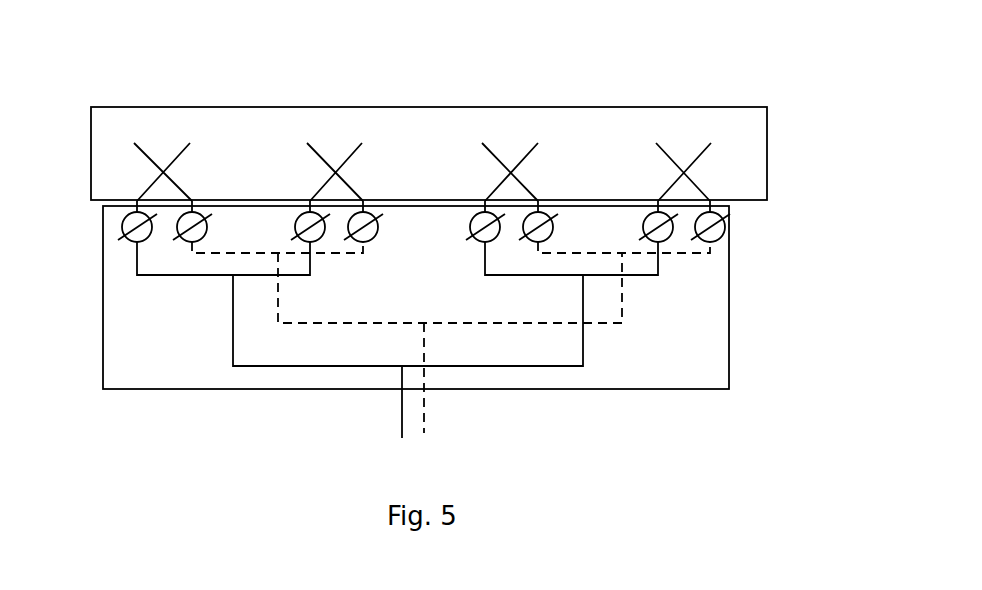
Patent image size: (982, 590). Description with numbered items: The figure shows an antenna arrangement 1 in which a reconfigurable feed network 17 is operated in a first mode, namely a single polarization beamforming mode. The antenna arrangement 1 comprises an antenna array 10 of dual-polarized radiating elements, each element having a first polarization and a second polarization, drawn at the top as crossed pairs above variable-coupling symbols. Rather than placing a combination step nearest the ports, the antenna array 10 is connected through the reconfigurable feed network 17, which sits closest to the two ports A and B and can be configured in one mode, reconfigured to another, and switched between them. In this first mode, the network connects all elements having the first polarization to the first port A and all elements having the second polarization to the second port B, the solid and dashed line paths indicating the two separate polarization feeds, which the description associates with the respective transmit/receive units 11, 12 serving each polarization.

The antenna arrangement 1 is at (735, 72).
The antenna array 10 is at (767, 189).
The transmit/receive unit 11 is at (258, 367).
The transmit/receive unit 12 is at (340, 325).
The reconfigurable feed network 17 is at (729, 330).